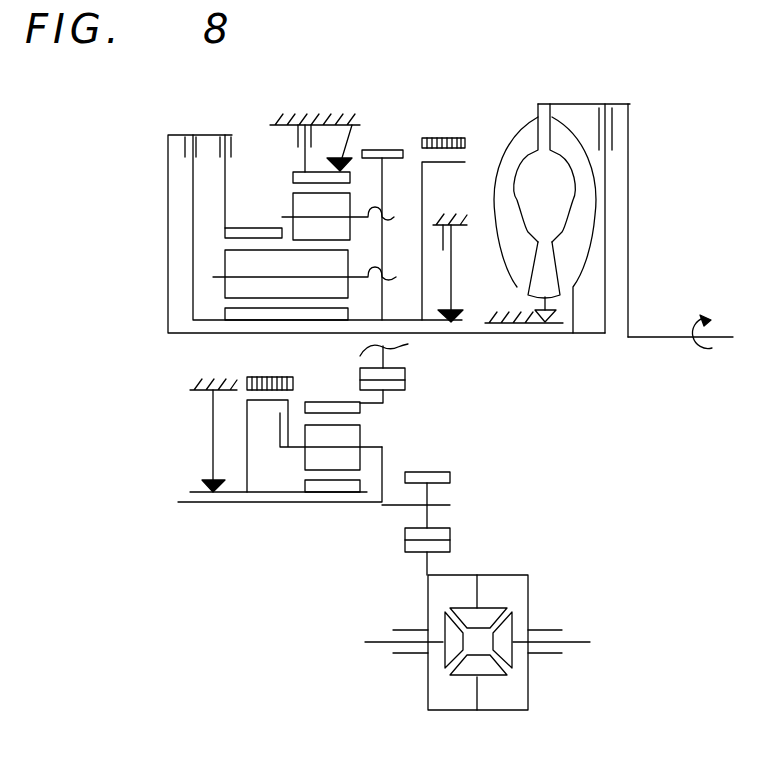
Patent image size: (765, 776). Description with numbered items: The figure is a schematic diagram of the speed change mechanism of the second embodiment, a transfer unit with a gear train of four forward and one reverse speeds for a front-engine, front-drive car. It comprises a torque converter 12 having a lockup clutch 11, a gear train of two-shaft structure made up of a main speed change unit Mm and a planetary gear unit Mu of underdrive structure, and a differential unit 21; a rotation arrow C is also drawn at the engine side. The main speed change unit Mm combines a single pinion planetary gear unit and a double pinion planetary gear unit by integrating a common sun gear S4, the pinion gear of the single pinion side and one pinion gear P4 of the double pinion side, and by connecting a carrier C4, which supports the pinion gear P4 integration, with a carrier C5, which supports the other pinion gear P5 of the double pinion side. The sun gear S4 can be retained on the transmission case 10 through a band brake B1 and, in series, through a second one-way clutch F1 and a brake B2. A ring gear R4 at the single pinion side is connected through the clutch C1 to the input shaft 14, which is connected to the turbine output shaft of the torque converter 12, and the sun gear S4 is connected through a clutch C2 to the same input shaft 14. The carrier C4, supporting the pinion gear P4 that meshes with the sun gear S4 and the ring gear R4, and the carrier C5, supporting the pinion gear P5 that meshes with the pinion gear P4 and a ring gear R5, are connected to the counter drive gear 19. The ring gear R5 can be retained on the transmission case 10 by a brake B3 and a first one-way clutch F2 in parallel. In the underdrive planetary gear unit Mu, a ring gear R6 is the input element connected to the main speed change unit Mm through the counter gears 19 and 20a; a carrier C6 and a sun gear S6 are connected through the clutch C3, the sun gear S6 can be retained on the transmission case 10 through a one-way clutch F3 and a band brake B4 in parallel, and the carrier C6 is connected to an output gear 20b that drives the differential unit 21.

The transmission case 10 is at (274, 118).
The lockup clutch 11 is at (614, 120).
The torque converter 12 is at (537, 118).
The input shaft 14 is at (432, 335).
The counter drive gear 19 is at (391, 150).
The counter gear 20a is at (405, 385).
The output gear 20b is at (440, 468).
The differential unit 21 is at (545, 594).
The band brake B1 is at (457, 134).
The brake B2 is at (468, 203).
The brake B3 is at (305, 129).
The band brake B4 is at (283, 359).
The clutch C1 is at (231, 118).
The clutch C2 is at (184, 136).
The clutch C3 is at (279, 413).
The carrier C4 is at (318, 280).
The carrier C5 is at (350, 220).
The carrier C6 is at (370, 447).
The second one-way clutch F1 is at (463, 318).
The first one-way clutch F2 is at (353, 124).
The one-way clutch F3 is at (202, 484).
The pinion gear P4 is at (225, 260).
The pinion gear P5 is at (294, 200).
The ring gear R4 is at (257, 229).
The ring gear R5 is at (294, 177).
The ring gear R6 is at (342, 402).
The sun gear S4 is at (349, 309).
The sun gear S6 is at (360, 486).
The main speed change unit Mm is at (386, 107).
The planetary gear unit of underdrive structure Mu is at (319, 508).
The rotation direction arrow C is at (680, 332).